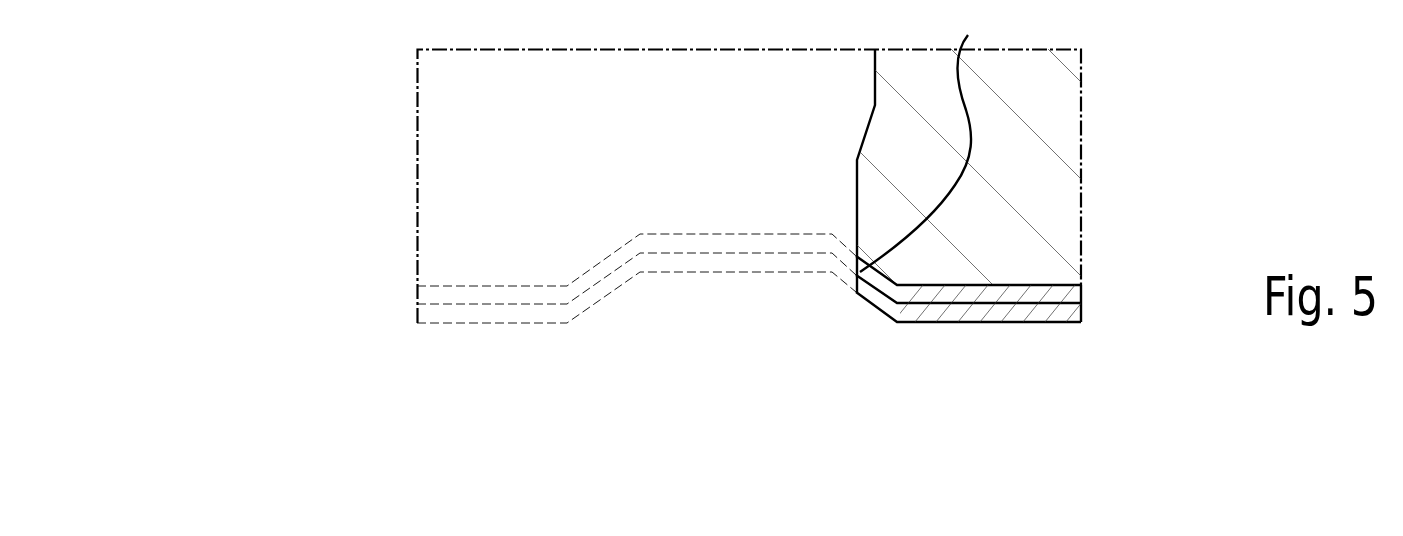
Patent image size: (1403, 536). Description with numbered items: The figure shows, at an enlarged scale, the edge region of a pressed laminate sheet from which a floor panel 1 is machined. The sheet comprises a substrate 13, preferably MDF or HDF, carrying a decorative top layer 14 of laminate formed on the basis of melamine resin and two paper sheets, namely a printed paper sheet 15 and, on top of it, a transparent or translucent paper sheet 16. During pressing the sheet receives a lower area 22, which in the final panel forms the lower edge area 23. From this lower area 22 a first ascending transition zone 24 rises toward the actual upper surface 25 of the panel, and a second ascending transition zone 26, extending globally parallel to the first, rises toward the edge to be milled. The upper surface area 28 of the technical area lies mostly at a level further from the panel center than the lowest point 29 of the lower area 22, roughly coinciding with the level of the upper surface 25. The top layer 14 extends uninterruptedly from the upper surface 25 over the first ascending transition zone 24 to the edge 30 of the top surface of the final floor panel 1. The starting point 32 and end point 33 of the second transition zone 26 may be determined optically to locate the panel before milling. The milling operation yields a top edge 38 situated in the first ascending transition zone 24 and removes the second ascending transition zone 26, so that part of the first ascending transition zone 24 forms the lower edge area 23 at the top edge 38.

The floor panel 1 is at (1047, 122).
The substrate 13 is at (1045, 187).
The decorative top layer 14 is at (1092, 303).
The printed paper sheet 15 is at (1052, 296).
The transparent or translucent paper sheet 16 is at (970, 312).
The lower area 22 is at (704, 310).
The lower edge area 23 is at (876, 304).
The first ascending transition zone 24 is at (850, 284).
The upper surface 25 is at (1029, 322).
The second ascending transition zone 26 is at (602, 302).
The upper surface area of the technical area 28 is at (497, 323).
The lowest point of the lower area 29 is at (685, 262).
The edge of the top surface 30 is at (840, 273).
The starting point of the second transitional zone 32 is at (685, 262).
The end point of the second transitional zone 33 is at (567, 323).
The top edge 38 is at (928, 138).